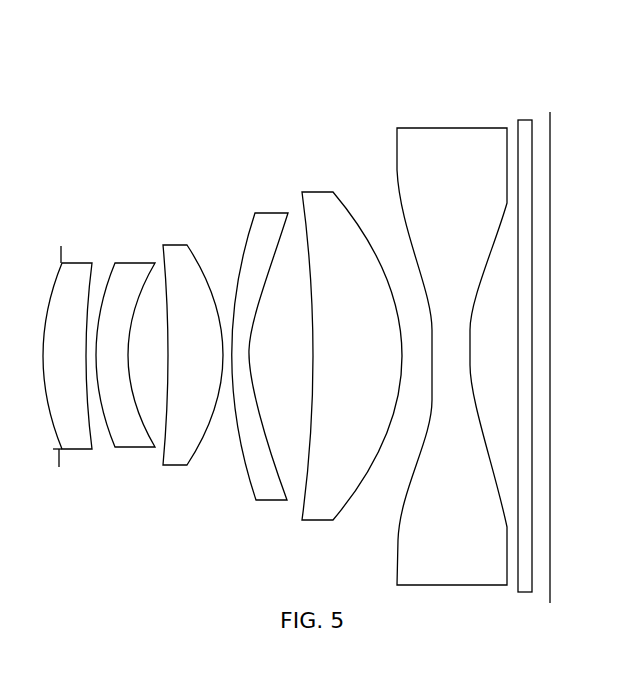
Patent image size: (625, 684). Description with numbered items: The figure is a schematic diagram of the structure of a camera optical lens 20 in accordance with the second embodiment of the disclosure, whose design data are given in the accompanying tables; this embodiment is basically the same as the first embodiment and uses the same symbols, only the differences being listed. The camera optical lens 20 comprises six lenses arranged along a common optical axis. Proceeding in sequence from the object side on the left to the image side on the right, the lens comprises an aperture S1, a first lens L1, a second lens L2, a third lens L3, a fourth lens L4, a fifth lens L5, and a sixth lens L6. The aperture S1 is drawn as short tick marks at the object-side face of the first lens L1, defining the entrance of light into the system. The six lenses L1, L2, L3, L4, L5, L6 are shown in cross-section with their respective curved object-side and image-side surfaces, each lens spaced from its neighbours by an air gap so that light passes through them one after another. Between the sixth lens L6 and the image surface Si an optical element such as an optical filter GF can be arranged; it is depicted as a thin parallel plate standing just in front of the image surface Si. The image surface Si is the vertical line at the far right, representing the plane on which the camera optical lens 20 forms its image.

The camera optical lens 20 is at (312, 60).
The aperture S1 is at (46, 349).
The first lens L1 is at (68, 339).
The second lens L2 is at (125, 338).
The third lens L3 is at (193, 340).
The fourth lens L4 is at (262, 340).
The fifth lens L5 is at (352, 340).
The sixth lens L6 is at (452, 341).
The optical filter GF is at (530, 338).
The image surface Si is at (555, 340).